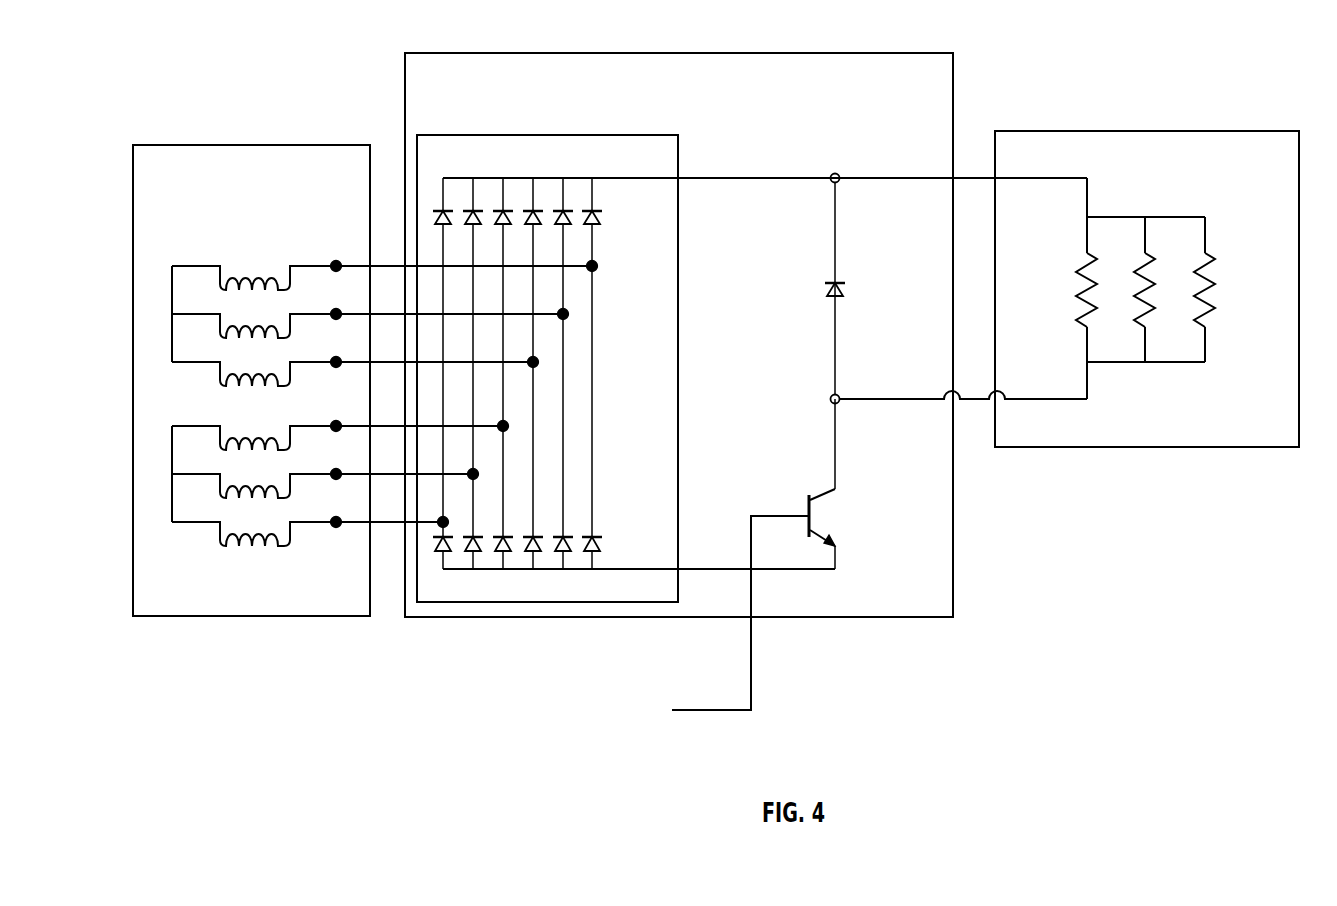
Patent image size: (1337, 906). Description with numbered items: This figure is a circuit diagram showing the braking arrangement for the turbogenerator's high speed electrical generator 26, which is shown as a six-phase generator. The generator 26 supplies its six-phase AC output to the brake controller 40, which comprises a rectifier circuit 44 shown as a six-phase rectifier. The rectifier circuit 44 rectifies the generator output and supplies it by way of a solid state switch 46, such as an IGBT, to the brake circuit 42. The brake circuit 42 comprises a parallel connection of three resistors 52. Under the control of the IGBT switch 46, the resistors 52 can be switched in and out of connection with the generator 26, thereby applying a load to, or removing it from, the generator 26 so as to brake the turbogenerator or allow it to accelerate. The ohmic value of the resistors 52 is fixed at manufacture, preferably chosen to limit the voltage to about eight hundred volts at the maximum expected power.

The high speed electrical generator 26 is at (248, 603).
The brake controller 40 is at (711, 375).
The brake circuit 42 is at (1147, 294).
The rectifier circuit 44 is at (652, 133).
The solid state switch 46 is at (825, 492).
The resistors 52 is at (1145, 262).